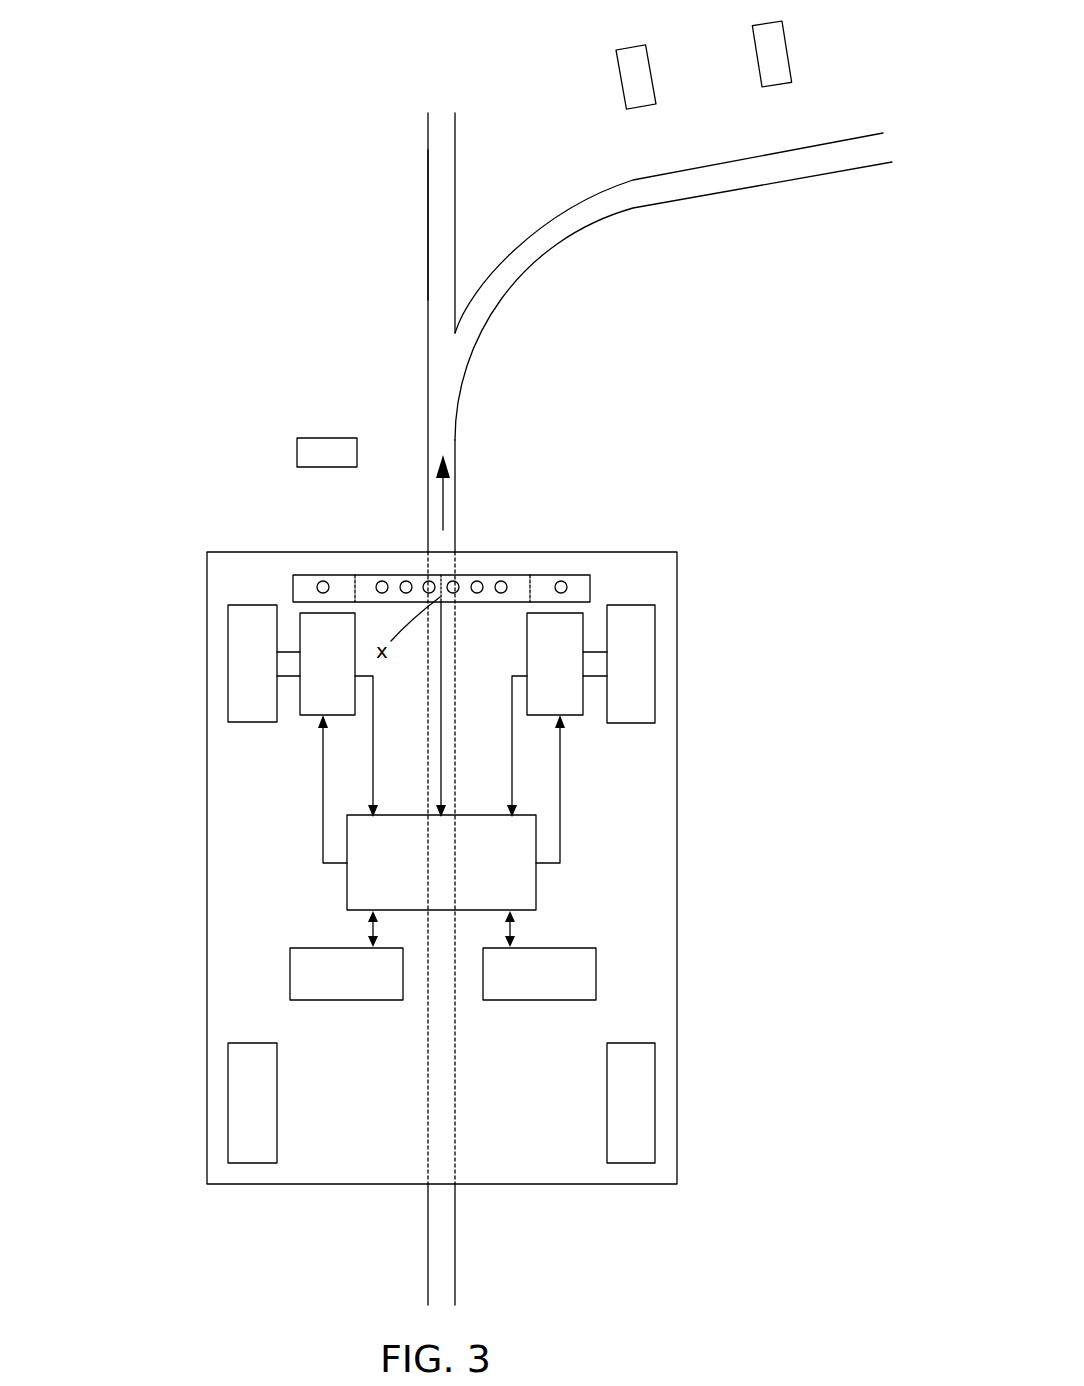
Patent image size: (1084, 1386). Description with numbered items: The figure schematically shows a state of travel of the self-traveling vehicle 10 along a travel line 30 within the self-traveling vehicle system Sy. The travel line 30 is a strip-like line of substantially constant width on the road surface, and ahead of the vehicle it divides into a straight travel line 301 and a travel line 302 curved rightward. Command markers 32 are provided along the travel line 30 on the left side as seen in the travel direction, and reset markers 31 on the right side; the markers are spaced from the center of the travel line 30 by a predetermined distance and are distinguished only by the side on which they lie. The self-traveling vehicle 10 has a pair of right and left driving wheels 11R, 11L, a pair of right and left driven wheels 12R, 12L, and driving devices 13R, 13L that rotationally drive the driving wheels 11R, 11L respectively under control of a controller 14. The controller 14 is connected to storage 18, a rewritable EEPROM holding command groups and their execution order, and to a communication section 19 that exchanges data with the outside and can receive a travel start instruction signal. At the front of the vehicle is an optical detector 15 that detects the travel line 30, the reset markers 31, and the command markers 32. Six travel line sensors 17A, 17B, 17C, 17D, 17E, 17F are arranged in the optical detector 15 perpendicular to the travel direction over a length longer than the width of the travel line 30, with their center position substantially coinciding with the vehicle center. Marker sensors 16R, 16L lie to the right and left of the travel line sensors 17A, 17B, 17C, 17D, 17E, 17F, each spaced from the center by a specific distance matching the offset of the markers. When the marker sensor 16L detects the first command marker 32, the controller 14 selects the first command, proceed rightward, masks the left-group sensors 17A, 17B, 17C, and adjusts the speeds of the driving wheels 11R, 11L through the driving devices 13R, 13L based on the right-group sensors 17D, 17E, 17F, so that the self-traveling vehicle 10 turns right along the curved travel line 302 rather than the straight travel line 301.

The self-traveling vehicle system Sy is at (210, 49).
The self-traveling vehicle 10 is at (682, 773).
The left driving wheel 11L is at (227, 665).
The right driving wheel 11R is at (656, 665).
The left driven wheel 12L is at (227, 1100).
The right driven wheel 12R is at (656, 1100).
The left driving device 13L is at (300, 716).
The right driving device 13R is at (582, 716).
The controller 14 is at (537, 885).
The optical detector 15 is at (483, 604).
The left marker sensor 16L is at (321, 579).
The right marker sensor 16R is at (562, 579).
The travel line sensor 17A is at (380, 579).
The travel line sensor 17B is at (405, 579).
The travel line sensor 17C is at (428, 579).
The travel line sensor 17D is at (454, 579).
The travel line sensor 17E is at (478, 579).
The travel line sensor 17F is at (502, 579).
The storage 18 is at (289, 971).
The communication section 19 is at (597, 975).
The travel line 30 is at (461, 410).
The straight travel line 301 is at (426, 211).
The rightward curved travel line 302 is at (634, 209).
The reset marker 31 is at (591, 590).
The command marker 32 is at (296, 457).